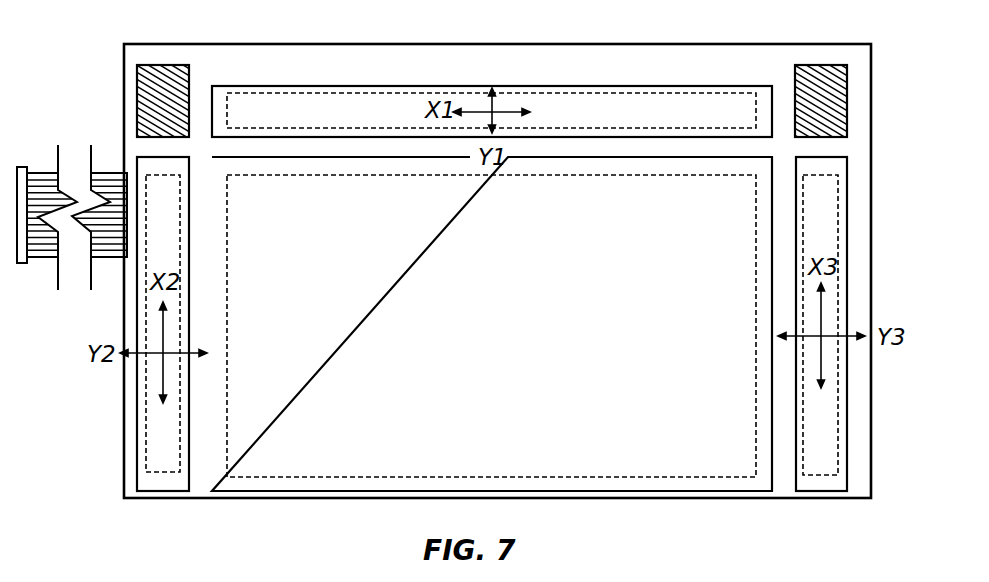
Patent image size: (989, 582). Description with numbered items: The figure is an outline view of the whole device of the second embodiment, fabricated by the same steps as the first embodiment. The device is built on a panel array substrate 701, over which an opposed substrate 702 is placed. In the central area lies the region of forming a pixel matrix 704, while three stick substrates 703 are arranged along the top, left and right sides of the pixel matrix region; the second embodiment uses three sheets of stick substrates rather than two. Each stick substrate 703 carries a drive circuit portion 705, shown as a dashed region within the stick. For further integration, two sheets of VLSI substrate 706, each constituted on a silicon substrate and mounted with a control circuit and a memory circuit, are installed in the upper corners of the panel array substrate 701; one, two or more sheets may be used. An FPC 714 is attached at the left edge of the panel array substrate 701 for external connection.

The panel array substrate 701 is at (557, 55).
The opposed substrate 702 is at (220, 475).
The stick substrate 703 is at (368, 89).
The region of forming a pixel matrix 704 is at (491, 326).
The drive circuit portion 705 is at (302, 102).
The VLSI substrate 706 is at (163, 65).
The FPC 714 is at (117, 187).